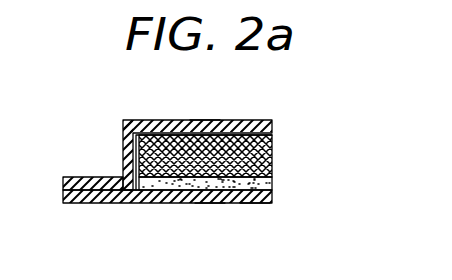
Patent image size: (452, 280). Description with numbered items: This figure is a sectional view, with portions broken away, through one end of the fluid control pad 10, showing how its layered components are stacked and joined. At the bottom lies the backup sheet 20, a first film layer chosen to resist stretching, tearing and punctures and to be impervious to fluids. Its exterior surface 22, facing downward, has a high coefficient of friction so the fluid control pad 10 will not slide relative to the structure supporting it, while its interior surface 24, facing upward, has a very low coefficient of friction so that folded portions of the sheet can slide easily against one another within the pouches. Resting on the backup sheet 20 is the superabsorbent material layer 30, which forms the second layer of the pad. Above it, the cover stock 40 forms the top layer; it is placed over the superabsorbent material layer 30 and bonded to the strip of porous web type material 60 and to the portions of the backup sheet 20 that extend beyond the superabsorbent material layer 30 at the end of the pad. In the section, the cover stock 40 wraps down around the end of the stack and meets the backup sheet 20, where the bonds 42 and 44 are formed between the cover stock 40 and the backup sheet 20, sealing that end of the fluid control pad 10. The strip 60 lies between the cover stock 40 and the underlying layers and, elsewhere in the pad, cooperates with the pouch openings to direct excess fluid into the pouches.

The fluid control pad 10 is at (166, 146).
The backup sheet 20 is at (204, 112).
The exterior surface 22 is at (180, 198).
The interior surface 24 is at (207, 193).
The superabsorbent material layer 30 is at (273, 180).
The cover stock 40 is at (166, 161).
The bond 42 is at (130, 198).
The bond 44 is at (82, 180).
The strip of porous web type material 60 is at (272, 158).